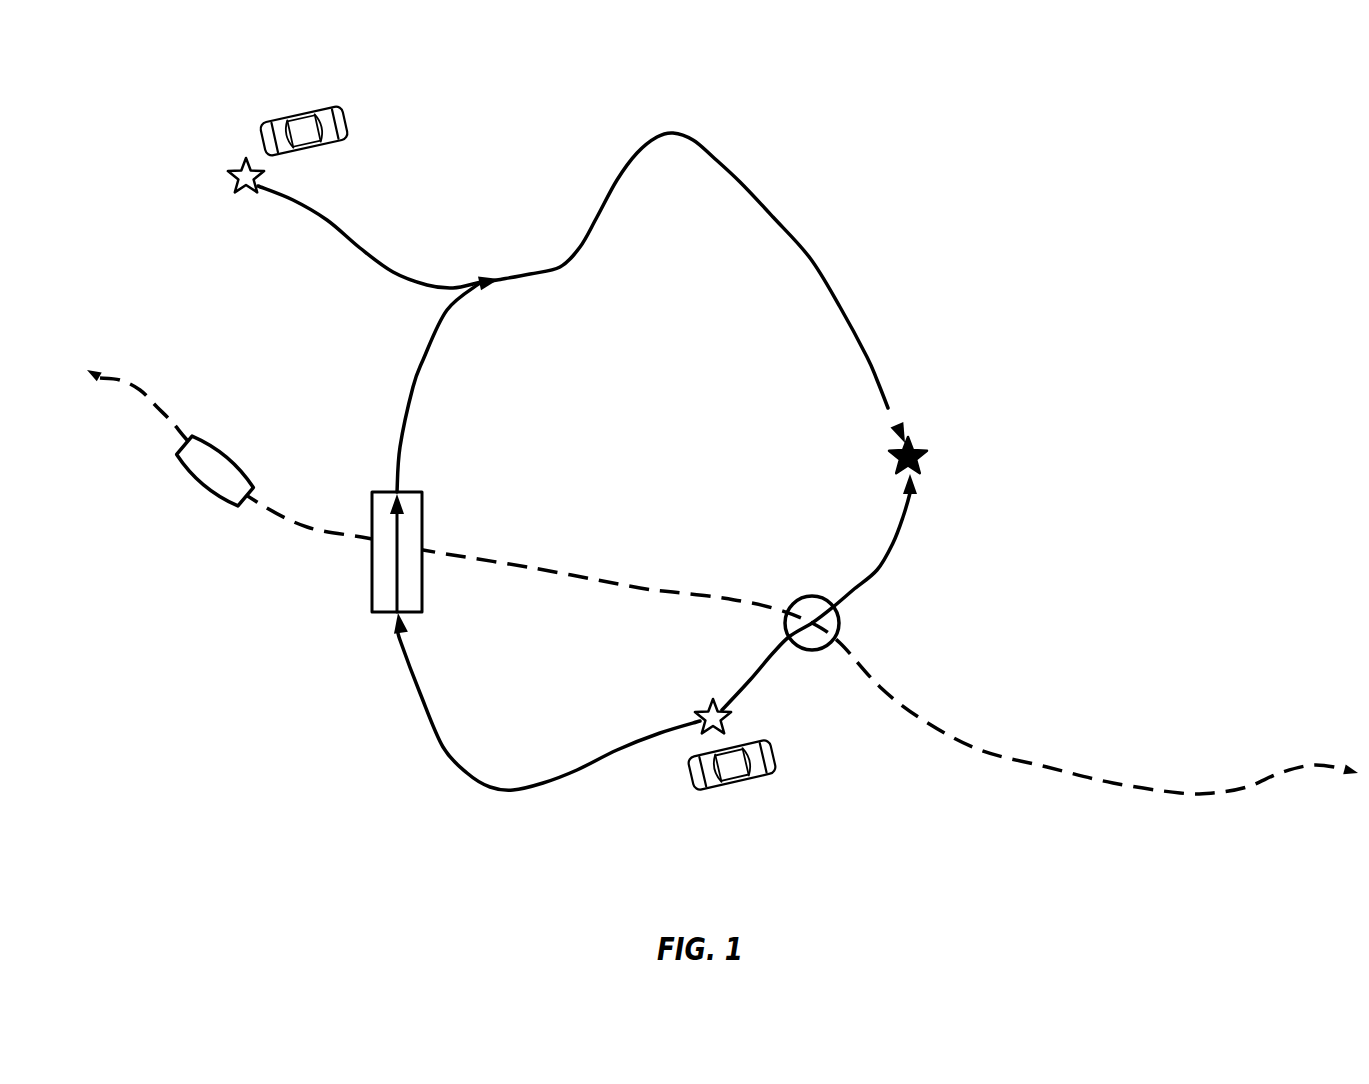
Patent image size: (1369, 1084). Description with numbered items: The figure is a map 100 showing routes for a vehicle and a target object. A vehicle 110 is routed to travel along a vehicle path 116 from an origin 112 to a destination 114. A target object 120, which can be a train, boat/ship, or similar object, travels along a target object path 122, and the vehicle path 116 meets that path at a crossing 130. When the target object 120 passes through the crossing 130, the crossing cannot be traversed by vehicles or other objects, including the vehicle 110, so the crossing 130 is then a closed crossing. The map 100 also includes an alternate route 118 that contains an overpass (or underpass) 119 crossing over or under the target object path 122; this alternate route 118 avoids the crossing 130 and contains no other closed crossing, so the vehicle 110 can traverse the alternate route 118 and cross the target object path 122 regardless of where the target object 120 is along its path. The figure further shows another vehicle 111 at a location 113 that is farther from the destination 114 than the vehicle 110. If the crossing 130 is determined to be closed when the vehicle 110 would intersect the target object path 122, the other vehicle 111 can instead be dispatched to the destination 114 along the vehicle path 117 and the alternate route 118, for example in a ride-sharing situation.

The map 100 is at (95, 92).
The vehicle 110 is at (773, 770).
The other vehicle 111 is at (350, 137).
The origin 112 is at (700, 721).
The location 113 is at (229, 172).
The destination 114 is at (928, 450).
The vehicle path 116 is at (880, 563).
The vehicle path 117 is at (398, 271).
The alternate route 118 is at (808, 258).
The overpass (or underpass) 119 is at (372, 492).
The target object 120 is at (220, 442).
The target object path 122 is at (140, 390).
The crossing 130 is at (797, 602).